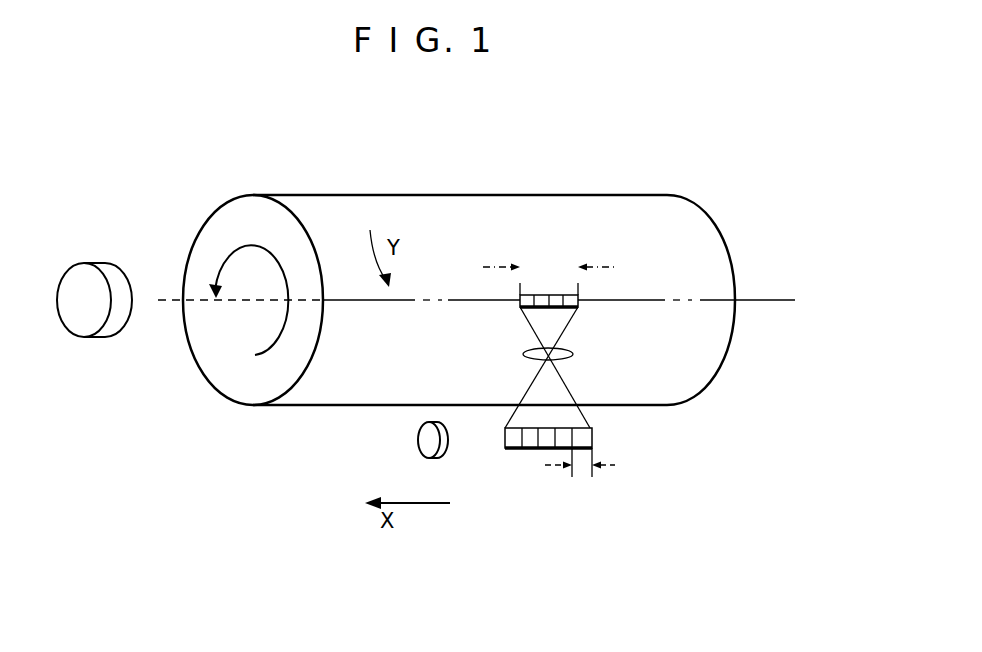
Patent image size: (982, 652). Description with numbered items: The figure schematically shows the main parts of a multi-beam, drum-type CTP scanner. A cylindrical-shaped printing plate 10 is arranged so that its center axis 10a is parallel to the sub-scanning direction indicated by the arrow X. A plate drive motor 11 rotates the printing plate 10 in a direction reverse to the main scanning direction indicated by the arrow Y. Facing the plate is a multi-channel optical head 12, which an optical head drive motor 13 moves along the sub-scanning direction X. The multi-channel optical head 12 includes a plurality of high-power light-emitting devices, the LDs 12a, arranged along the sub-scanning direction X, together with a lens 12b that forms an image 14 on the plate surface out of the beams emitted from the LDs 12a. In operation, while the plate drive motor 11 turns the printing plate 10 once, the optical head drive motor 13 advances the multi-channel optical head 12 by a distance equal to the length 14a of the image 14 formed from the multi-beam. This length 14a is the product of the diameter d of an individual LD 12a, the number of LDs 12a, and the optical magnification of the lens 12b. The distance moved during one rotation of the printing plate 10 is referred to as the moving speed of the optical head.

The printing plate 10 is at (207, 377).
The center axis 10a is at (764, 298).
The plate drive motor 11 is at (86, 265).
The multi-channel optical head 12 is at (612, 348).
The high-power light-emitting devices (LDs) 12a is at (540, 448).
The lens 12b is at (525, 352).
The optical head drive motor 13 is at (418, 441).
The image 14 is at (548, 295).
The length of the image 14a is at (543, 267).
The diameter of the LD d is at (580, 472).